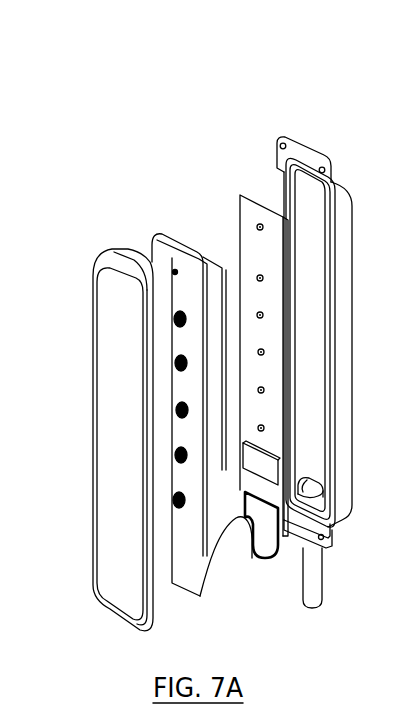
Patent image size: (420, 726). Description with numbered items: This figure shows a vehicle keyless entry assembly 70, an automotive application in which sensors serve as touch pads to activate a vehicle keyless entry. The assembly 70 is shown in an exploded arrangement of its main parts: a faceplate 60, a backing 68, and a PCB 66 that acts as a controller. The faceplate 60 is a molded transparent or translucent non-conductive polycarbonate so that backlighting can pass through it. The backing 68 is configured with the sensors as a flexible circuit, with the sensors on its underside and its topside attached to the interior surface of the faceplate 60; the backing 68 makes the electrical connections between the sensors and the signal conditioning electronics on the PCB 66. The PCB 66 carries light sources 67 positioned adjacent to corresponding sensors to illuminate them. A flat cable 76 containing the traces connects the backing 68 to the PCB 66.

The vehicle keyless entry assembly 70 is at (207, 122).
The faceplate 60 is at (105, 283).
The backing 68 is at (150, 246).
The PCB 66 is at (240, 213).
The light sources 67 is at (257, 278).
The flat cable 76 is at (268, 558).